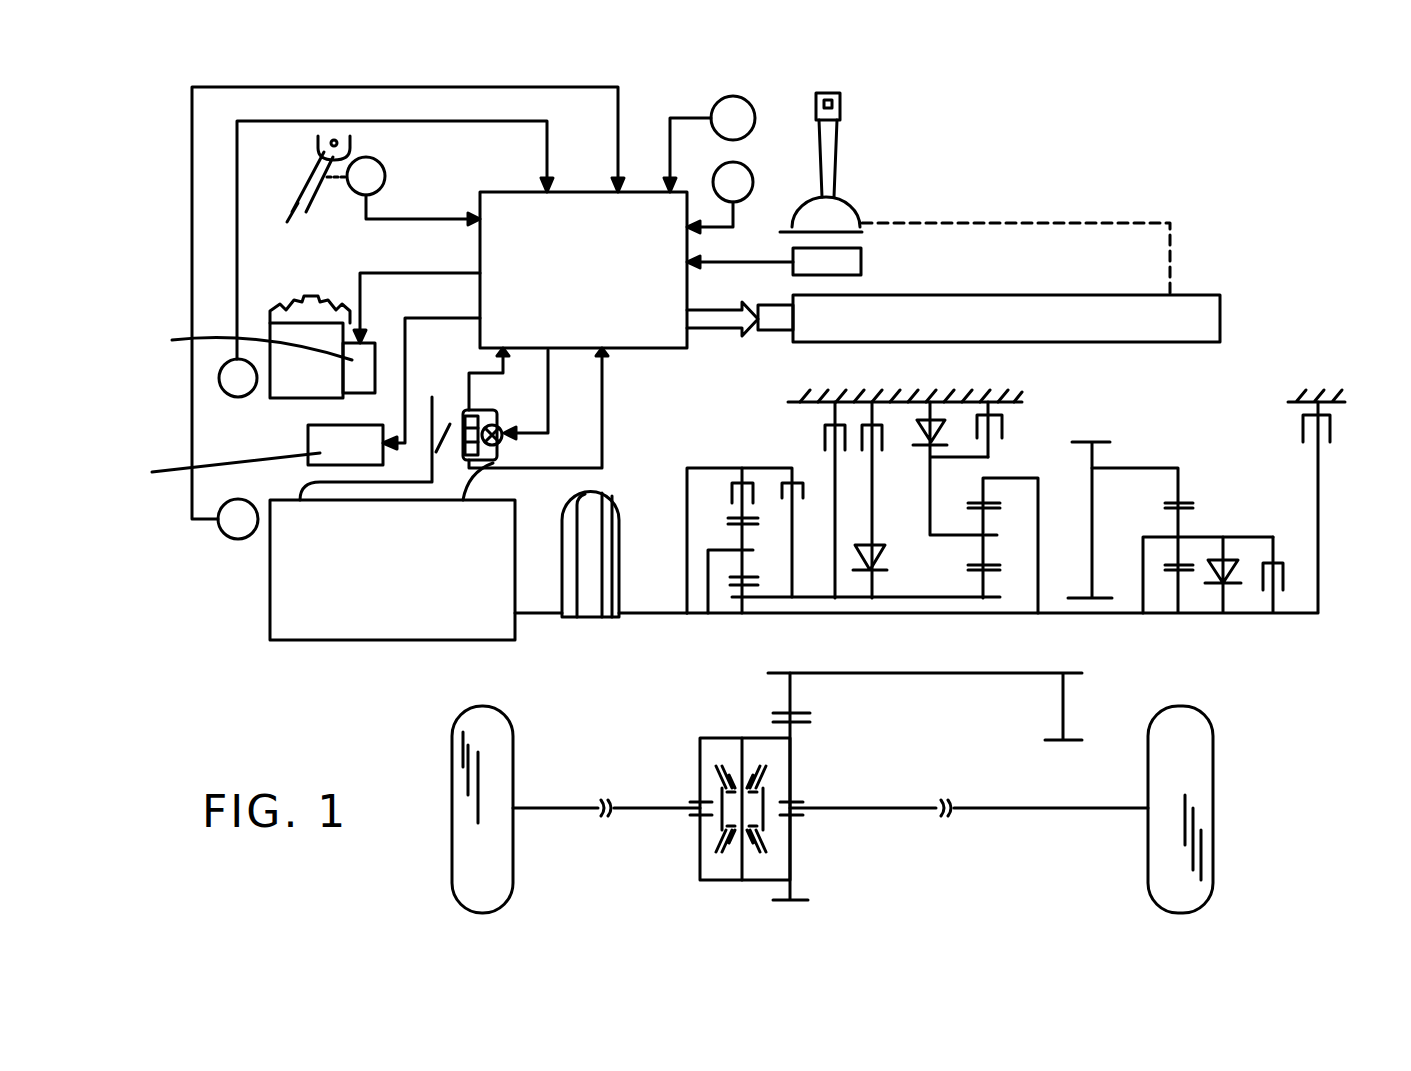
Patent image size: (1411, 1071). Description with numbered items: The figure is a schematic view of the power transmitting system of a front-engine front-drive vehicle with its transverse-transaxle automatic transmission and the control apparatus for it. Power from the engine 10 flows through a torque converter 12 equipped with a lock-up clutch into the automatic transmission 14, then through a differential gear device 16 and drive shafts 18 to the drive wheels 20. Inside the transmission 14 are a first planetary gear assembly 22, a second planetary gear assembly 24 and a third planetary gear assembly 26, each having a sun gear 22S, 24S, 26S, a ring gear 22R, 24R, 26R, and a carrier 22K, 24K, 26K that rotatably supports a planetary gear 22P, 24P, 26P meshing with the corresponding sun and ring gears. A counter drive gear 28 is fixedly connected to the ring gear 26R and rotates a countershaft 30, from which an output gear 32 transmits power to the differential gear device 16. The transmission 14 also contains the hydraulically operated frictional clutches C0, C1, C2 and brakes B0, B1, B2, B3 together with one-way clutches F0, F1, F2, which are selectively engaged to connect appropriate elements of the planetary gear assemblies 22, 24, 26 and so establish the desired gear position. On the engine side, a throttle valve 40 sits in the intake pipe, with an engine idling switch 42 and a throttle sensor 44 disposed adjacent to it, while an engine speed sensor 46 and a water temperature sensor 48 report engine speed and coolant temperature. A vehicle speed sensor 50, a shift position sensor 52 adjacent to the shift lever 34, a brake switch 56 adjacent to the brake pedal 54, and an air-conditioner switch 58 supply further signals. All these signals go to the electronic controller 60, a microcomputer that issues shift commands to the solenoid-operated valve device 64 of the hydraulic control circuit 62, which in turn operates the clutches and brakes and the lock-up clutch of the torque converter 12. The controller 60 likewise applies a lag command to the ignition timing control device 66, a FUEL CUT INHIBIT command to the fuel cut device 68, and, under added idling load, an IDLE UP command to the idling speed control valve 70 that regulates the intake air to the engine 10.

The engine 10 is at (348, 627).
The torque converter 12 is at (590, 618).
The automatic transmission 14 is at (1002, 527).
The differential gear device 16 is at (684, 878).
The drive shafts 18 is at (563, 807).
The drive wheels 20 is at (497, 862).
The first planetary gear assembly 22 is at (704, 562).
The ring gear 22R is at (732, 515).
The planetary gear 22P is at (732, 527).
The carrier 22K is at (712, 550).
The sun gear 22S is at (732, 588).
The second planetary gear assembly 24 is at (951, 560).
The ring gear 24R is at (975, 500).
The planetary gear 24P is at (973, 515).
The carrier 24K is at (933, 543).
The sun gear 24S is at (997, 578).
The third planetary gear assembly 26 is at (1183, 515).
The ring gear 26R is at (1187, 500).
The planetary gear 26P is at (1190, 513).
The carrier 26K is at (1162, 535).
The sun gear 26S is at (1168, 573).
The counter drive gear 28 is at (1100, 440).
The countershaft 30 is at (927, 675).
The output gear 32 is at (795, 713).
The shift lever 34 is at (828, 163).
The throttle valve 40 is at (446, 430).
The engine idling switch 42 is at (490, 468).
The throttle sensor 44 is at (470, 413).
The engine speed sensor 46 is at (238, 390).
The water temperature sensor 48 is at (238, 540).
The vehicle speed sensor 50 is at (740, 116).
The shift position sensor 52 is at (851, 265).
The brake pedal 54 is at (313, 190).
The brake switch 56 is at (378, 181).
The air-conditioner switch 58 is at (737, 180).
The electronic controller 60 is at (495, 198).
The hydraulic control circuit 62 is at (1203, 322).
The solenoid-operated valve device 64 is at (778, 323).
The ignition timing control device 66 is at (365, 362).
The fuel cut device 68 is at (308, 437).
The idling speed control valve 70 is at (497, 442).
The clutch C0 is at (1287, 578).
The clutch C1 is at (732, 486).
The clutch C2 is at (804, 488).
The brake B0 is at (1330, 430).
The brake B1 is at (826, 432).
The brake B2 is at (887, 432).
The brake B3 is at (1004, 430).
The one-way clutch F0 is at (1227, 557).
The one-way clutch F1 is at (858, 556).
The one-way clutch F2 is at (933, 422).